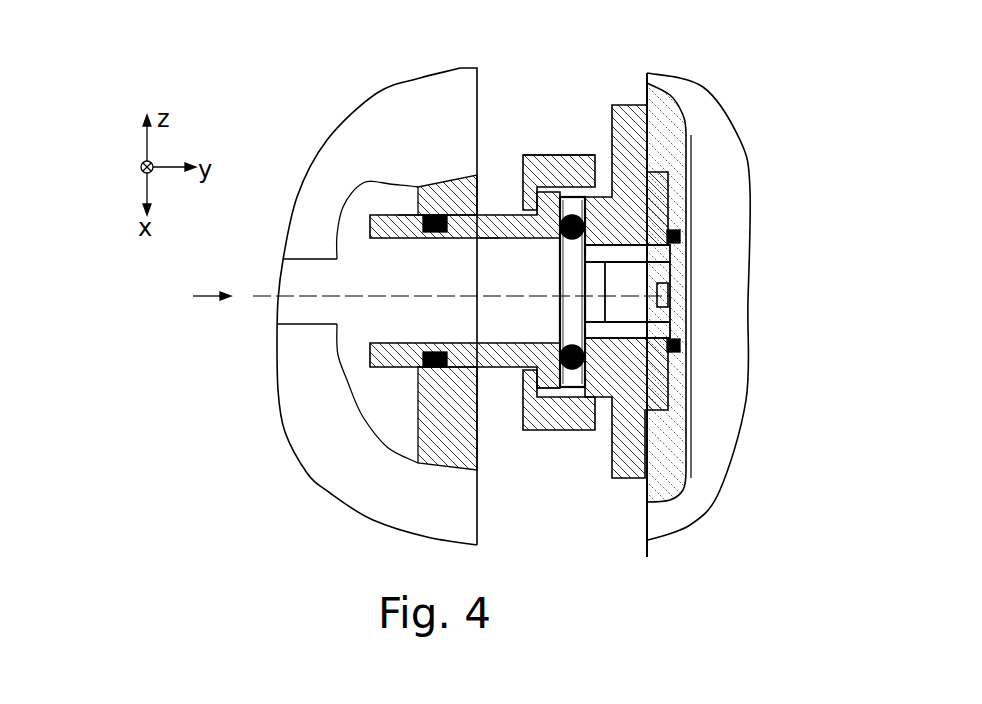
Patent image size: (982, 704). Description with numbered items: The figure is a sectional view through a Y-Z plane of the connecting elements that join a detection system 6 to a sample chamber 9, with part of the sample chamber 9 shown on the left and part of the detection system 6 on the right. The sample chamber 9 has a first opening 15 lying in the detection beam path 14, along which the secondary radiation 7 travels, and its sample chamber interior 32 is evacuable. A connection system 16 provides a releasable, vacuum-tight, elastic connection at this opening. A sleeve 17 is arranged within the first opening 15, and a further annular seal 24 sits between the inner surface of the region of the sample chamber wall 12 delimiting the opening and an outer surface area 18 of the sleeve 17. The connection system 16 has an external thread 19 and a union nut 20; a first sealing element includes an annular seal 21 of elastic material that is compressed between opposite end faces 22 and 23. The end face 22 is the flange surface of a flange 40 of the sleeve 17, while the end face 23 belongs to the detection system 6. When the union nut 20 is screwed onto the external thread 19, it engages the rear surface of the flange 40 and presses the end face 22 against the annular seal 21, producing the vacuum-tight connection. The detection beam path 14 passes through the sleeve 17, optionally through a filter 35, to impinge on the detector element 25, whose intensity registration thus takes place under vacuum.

The detection system 6 is at (757, 83).
The secondary radiation 7 is at (206, 298).
The sample chamber 9 is at (268, 436).
The sample chamber wall 12 is at (471, 455).
The detection beam path 14 is at (433, 296).
The first opening 15 is at (413, 368).
The connection system 16 is at (537, 105).
The sleeve 17 is at (489, 222).
The outer surface area 18 is at (398, 210).
The external thread 19 is at (567, 182).
The union nut 20 is at (544, 172).
The annular seal 21 is at (587, 213).
The end face 22 is at (562, 341).
The end face 23 is at (580, 339).
The further annular seal 24 is at (443, 213).
The detector element 25 is at (660, 308).
The sample chamber interior 32 is at (343, 294).
The filter 35 is at (607, 267).
The flange 40 is at (545, 392).